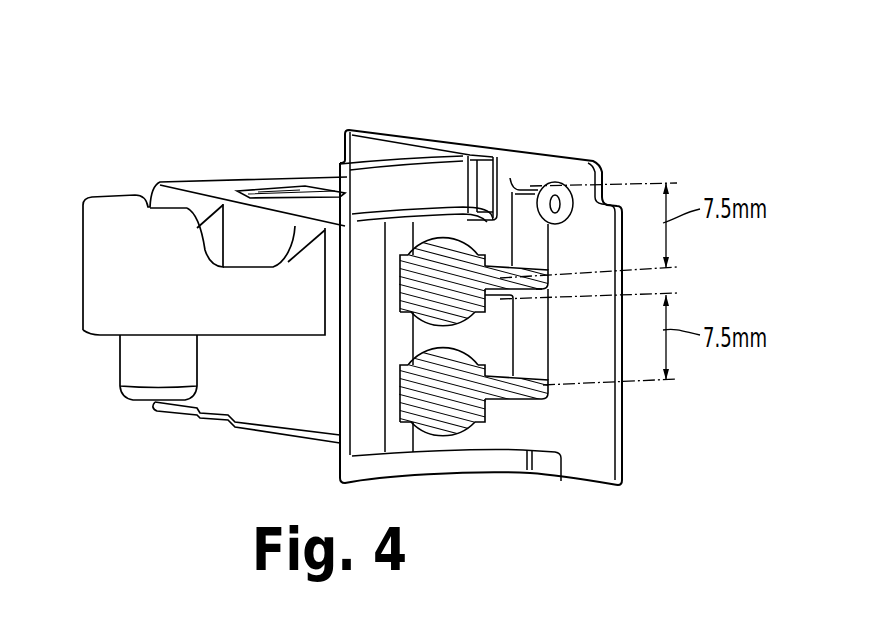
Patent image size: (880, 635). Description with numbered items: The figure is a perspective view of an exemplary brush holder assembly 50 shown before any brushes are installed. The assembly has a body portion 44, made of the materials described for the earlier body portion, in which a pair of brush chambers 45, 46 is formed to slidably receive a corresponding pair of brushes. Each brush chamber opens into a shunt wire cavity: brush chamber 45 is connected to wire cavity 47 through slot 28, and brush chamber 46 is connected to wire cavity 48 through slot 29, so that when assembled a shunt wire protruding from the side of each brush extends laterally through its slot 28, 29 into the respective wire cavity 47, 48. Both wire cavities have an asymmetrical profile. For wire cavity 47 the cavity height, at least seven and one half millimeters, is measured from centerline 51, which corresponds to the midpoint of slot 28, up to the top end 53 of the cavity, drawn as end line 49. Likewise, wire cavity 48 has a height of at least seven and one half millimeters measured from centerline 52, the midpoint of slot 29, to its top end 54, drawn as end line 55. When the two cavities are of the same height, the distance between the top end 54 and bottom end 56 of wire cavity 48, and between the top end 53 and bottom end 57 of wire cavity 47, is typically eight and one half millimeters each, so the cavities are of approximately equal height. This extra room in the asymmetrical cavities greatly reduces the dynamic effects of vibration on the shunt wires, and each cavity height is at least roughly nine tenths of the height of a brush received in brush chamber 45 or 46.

The brush holder assembly 50 is at (100, 126).
The body portion 44 is at (597, 433).
The brush chamber 45 is at (419, 307).
The brush chamber 46 is at (438, 425).
The wire cavity 47 is at (538, 238).
The wire cavity 48 is at (538, 333).
The end line 49 is at (640, 182).
The centerline 51 is at (657, 270).
The centerline 52 is at (633, 382).
The top end 53 is at (510, 178).
The top end 54 is at (537, 295).
The end line 55 is at (640, 293).
The bottom end 56 is at (540, 398).
The bottom end 57 is at (540, 292).
The slot 28 is at (480, 273).
The slot 29 is at (490, 390).